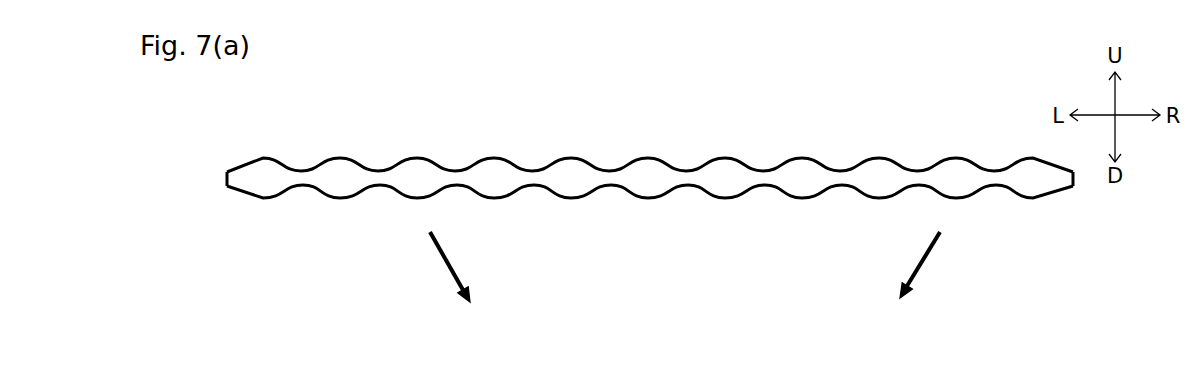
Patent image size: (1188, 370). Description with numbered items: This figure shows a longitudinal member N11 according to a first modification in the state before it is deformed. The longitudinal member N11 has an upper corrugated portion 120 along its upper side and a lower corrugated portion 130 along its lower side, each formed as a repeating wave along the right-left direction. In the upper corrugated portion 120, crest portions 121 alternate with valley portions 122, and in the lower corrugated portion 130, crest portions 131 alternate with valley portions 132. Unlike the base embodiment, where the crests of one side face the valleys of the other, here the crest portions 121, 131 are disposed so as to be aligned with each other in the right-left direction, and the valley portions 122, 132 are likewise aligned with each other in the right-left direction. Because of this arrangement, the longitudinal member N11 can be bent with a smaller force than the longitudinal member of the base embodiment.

The longitudinal member N11 is at (180, 106).
The upper corrugated portion 120 is at (238, 133).
The crest portions 121 is at (263, 157).
The valley portions 122 is at (301, 170).
The lower corrugated portion 130 is at (238, 222).
The crest portions 131 is at (263, 199).
The valley portions 132 is at (303, 186).